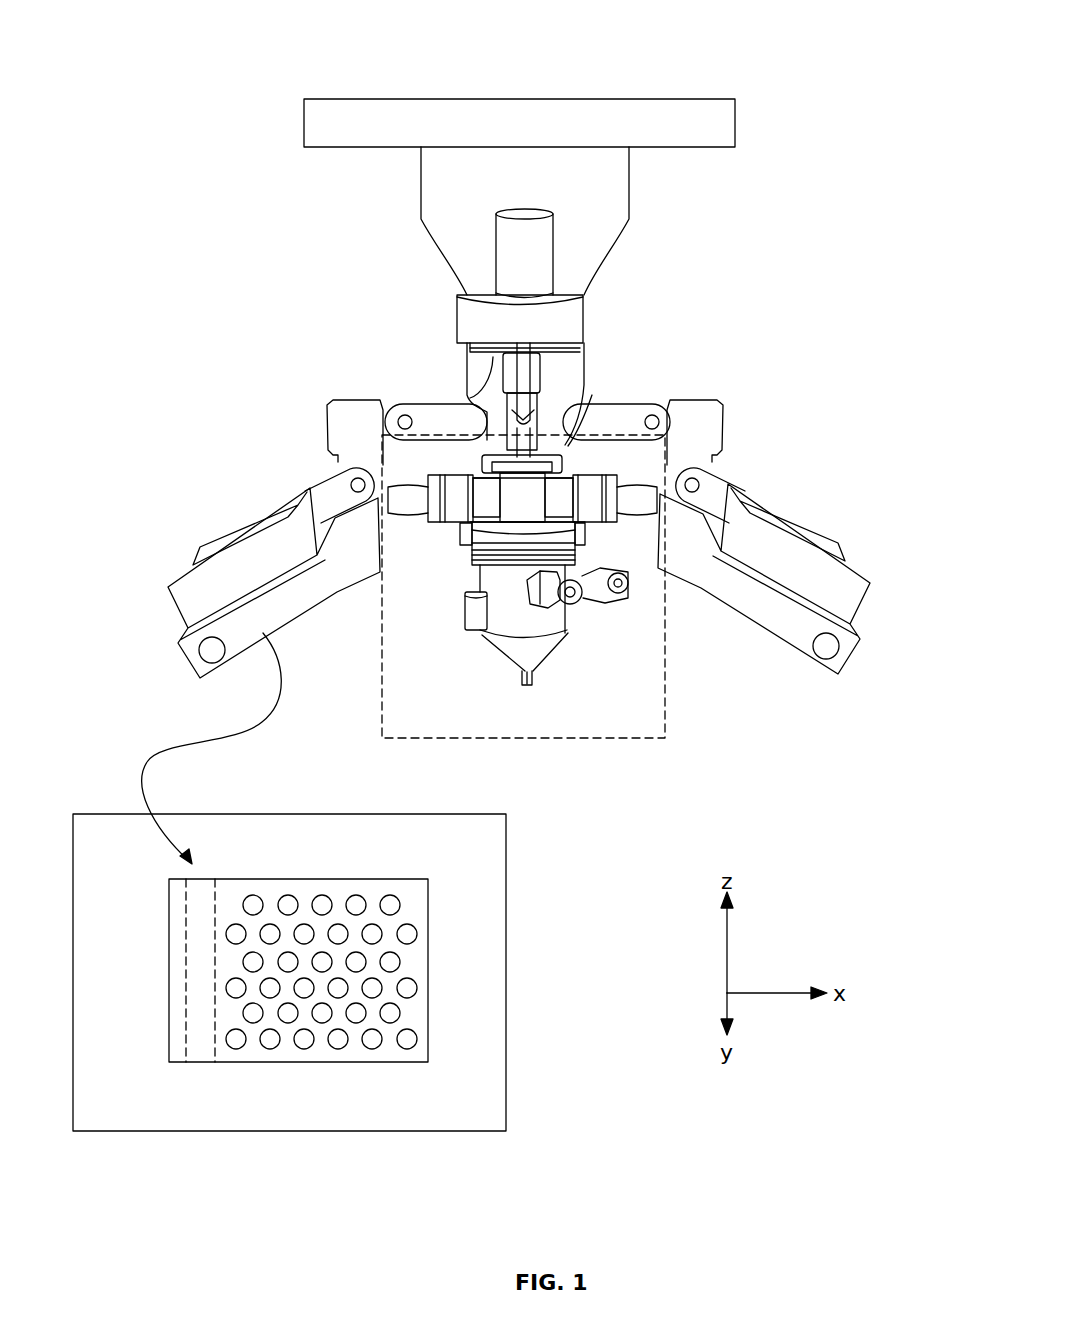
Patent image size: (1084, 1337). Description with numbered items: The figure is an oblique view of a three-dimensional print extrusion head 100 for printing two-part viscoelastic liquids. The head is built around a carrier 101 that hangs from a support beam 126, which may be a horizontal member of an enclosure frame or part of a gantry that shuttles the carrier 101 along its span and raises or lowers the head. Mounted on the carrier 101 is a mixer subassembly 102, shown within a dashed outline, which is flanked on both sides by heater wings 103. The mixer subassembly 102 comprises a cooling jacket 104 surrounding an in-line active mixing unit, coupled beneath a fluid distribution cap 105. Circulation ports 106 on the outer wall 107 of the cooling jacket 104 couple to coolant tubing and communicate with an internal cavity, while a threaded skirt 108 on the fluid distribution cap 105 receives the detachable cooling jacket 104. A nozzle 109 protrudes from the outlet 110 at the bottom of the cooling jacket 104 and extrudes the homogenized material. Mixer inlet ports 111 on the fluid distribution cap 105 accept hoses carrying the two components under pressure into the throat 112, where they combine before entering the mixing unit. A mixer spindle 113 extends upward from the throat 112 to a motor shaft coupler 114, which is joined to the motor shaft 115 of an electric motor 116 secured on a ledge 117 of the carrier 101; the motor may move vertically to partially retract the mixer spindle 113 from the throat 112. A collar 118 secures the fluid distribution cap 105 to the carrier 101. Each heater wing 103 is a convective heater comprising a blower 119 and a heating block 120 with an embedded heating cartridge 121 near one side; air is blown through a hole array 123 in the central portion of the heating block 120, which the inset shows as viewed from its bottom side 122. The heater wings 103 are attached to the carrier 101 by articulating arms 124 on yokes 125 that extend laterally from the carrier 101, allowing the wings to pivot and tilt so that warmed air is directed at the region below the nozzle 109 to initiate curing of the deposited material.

The 3D print extrusion head 100 is at (772, 48).
The carrier 101 is at (593, 176).
The mixer subassembly 102 is at (427, 742).
The heater wings 103 is at (165, 645).
The cooling jacket 104 is at (455, 570).
The fluid distribution cap 105 is at (452, 537).
The circulation ports 106 is at (590, 606).
The outer wall 107 is at (551, 618).
The skirt 108 is at (576, 549).
The nozzle 109 is at (522, 677).
The outlet 110 is at (532, 671).
The mixer inlet ports 111 is at (463, 482).
The throat 112 is at (590, 402).
The mixer spindle 113 is at (532, 456).
The motor shaft coupler 114 is at (465, 397).
The motor shaft 115 is at (468, 342).
The electric motor 116 is at (540, 248).
The ledge 117 is at (562, 322).
The collar 118 is at (428, 428).
The blower 119 is at (297, 508).
The heating block 120 is at (278, 625).
The heating cartridge 121 is at (205, 665).
The bottom side 122 is at (325, 610).
The hole array 123 is at (413, 936).
The articulating arms 124 is at (320, 478).
The yokes 125 is at (628, 408).
The support beam 126 is at (366, 108).